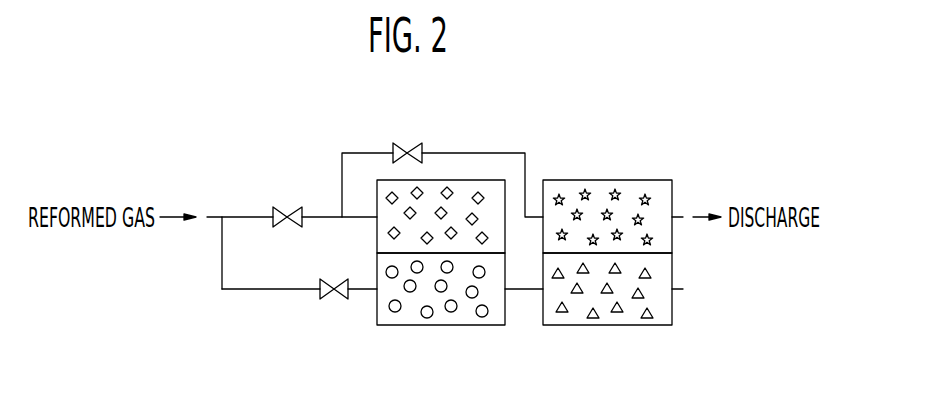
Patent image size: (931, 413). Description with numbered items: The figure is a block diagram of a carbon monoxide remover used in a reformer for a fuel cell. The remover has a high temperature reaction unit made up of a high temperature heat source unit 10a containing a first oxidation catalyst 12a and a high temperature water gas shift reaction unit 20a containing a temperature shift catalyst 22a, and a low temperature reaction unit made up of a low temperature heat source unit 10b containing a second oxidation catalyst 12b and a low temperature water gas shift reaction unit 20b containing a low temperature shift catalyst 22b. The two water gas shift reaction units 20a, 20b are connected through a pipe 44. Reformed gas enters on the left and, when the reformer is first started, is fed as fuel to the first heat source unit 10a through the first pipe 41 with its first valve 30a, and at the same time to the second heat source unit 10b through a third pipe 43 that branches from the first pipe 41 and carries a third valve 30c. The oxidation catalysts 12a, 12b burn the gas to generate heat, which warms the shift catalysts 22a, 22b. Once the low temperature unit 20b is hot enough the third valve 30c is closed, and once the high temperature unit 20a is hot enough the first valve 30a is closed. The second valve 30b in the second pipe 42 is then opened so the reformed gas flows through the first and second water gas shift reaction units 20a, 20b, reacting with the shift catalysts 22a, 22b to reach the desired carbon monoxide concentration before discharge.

The high temperature heat source unit 10a is at (437, 179).
The first oxidation catalyst 12a is at (478, 192).
The high temperature water gas shift reaction unit 20a is at (428, 325).
The temperature shift catalyst 22a is at (481, 317).
The low temperature heat source unit 10b is at (595, 179).
The second oxidation catalyst 12b is at (646, 193).
The low temperature water gas shift reaction unit 20b is at (593, 325).
The low temperature shift catalyst 22b is at (648, 318).
The first valve 30a is at (297, 203).
The second valve 30b is at (320, 299).
The third valve 30c is at (405, 151).
The first pipe 41 is at (243, 213).
The second pipe 42 is at (258, 290).
The third pipe 43 is at (367, 151).
The pipe 44 is at (517, 292).